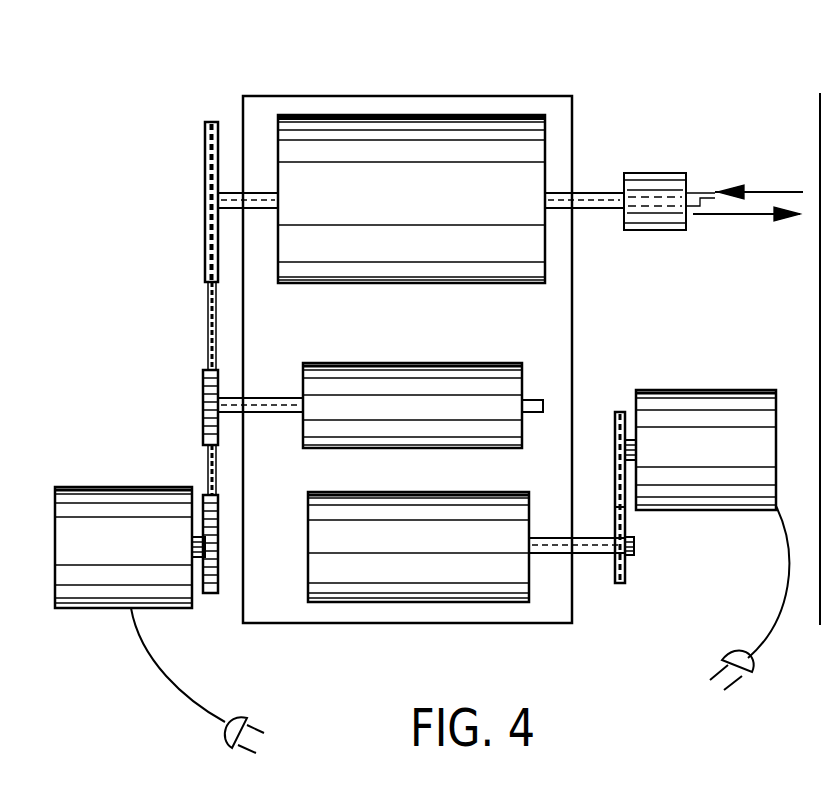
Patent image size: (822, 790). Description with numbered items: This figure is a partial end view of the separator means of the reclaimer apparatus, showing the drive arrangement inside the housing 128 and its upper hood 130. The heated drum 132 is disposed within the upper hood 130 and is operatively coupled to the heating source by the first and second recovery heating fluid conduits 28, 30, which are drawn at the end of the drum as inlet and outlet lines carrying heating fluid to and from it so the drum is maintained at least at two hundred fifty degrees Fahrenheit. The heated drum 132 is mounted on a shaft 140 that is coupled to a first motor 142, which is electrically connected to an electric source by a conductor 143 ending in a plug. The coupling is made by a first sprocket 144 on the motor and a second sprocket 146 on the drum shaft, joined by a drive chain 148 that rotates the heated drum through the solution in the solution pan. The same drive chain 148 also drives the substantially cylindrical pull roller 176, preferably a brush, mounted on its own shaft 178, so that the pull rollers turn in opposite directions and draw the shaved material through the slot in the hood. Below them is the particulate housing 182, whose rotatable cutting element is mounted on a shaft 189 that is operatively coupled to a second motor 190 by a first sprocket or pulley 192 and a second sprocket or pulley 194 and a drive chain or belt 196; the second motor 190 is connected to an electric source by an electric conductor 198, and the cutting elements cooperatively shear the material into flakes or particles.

The first recovery heating fluid conduit 28 is at (760, 190).
The second recovery heating fluid conduit 30 is at (745, 213).
The housing 128 is at (820, 107).
The upper hood 130 is at (402, 95).
The heated drum 132 is at (545, 147).
The shaft 140 is at (258, 190).
The first motor 142 is at (147, 487).
The conductor 143 is at (175, 690).
The first sprocket 144 is at (213, 595).
The second sprocket 146 is at (205, 180).
The drive chain 148 is at (208, 325).
The pull roller 176 is at (413, 363).
The shaft 178 is at (260, 398).
The particulate housing 182 is at (388, 602).
The shaft 189 is at (580, 555).
The second motor 190 is at (712, 390).
The first sprocket or pulley 192 is at (617, 412).
The second sprocket or pulley 194 is at (625, 572).
The drive chain or belt 196 is at (632, 508).
The electric conductor 198 is at (765, 628).